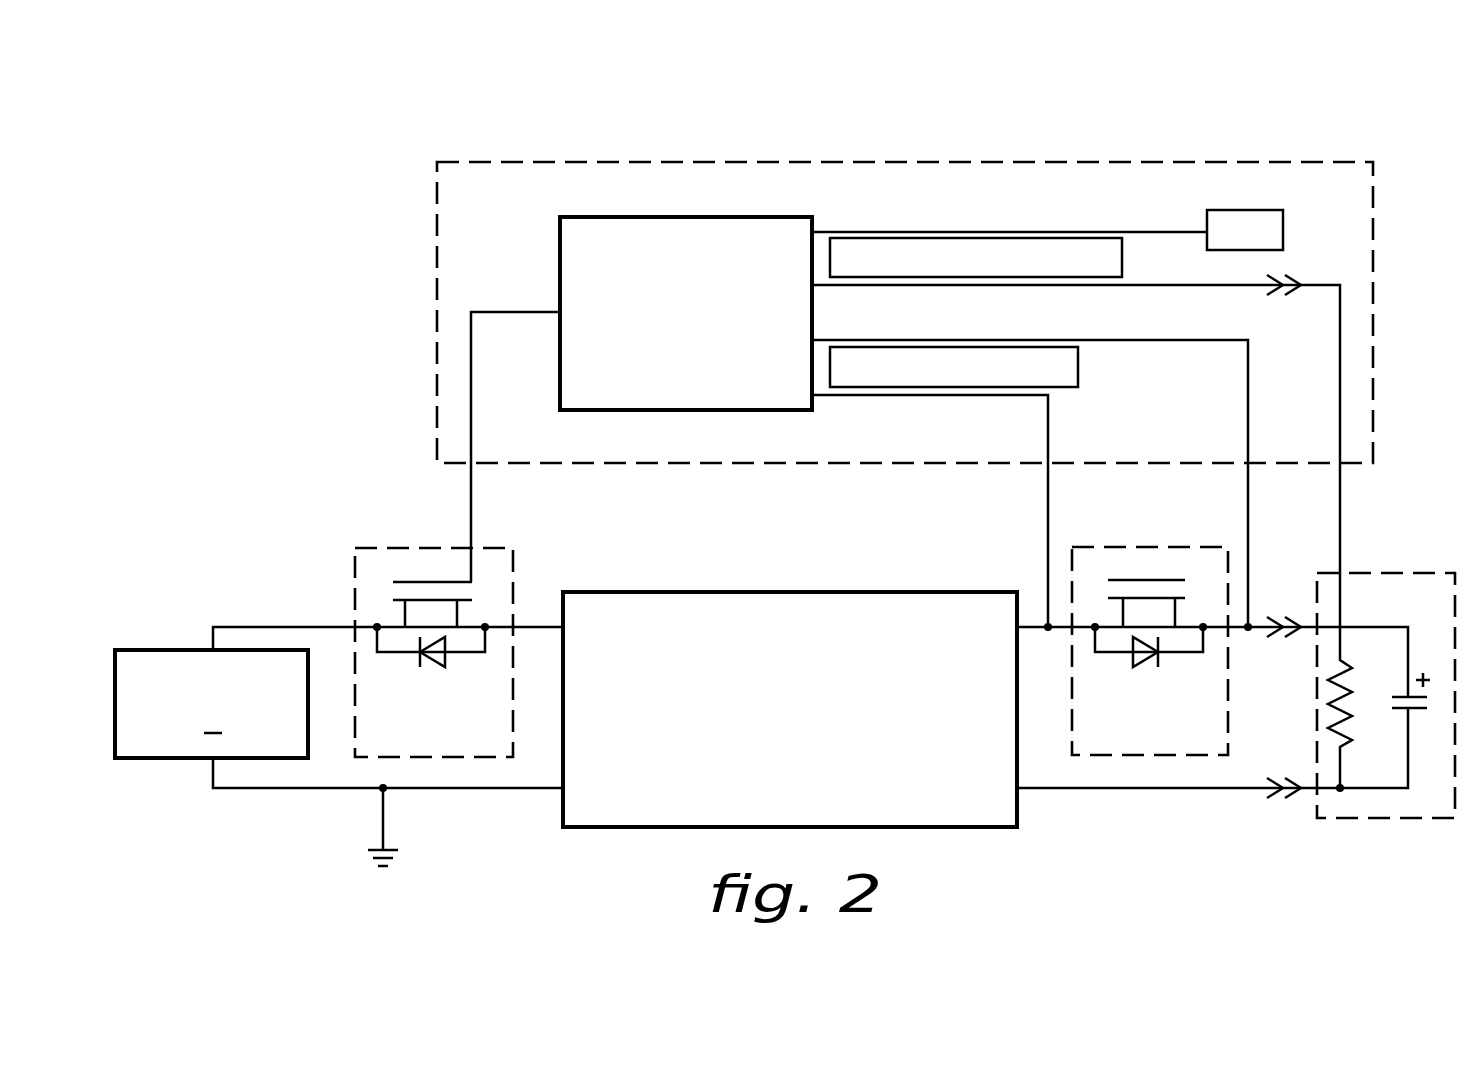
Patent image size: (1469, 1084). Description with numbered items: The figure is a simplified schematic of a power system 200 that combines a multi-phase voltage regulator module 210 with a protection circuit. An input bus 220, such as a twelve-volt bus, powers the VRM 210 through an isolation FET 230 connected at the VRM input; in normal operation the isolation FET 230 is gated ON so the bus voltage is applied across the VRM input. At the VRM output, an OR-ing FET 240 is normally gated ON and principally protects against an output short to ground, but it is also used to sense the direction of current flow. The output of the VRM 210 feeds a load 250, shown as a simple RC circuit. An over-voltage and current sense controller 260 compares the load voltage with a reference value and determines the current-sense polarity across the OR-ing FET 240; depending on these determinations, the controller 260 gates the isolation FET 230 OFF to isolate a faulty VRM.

The power system 200 is at (290, 323).
The multi-phase voltage regulator module 210 is at (753, 791).
The input bus 220 is at (160, 650).
The isolation FET 230 is at (397, 548).
The OR-ing FET 240 is at (1185, 580).
The load 250 is at (1395, 573).
The over-voltage and current sense controller 260 is at (1250, 162).